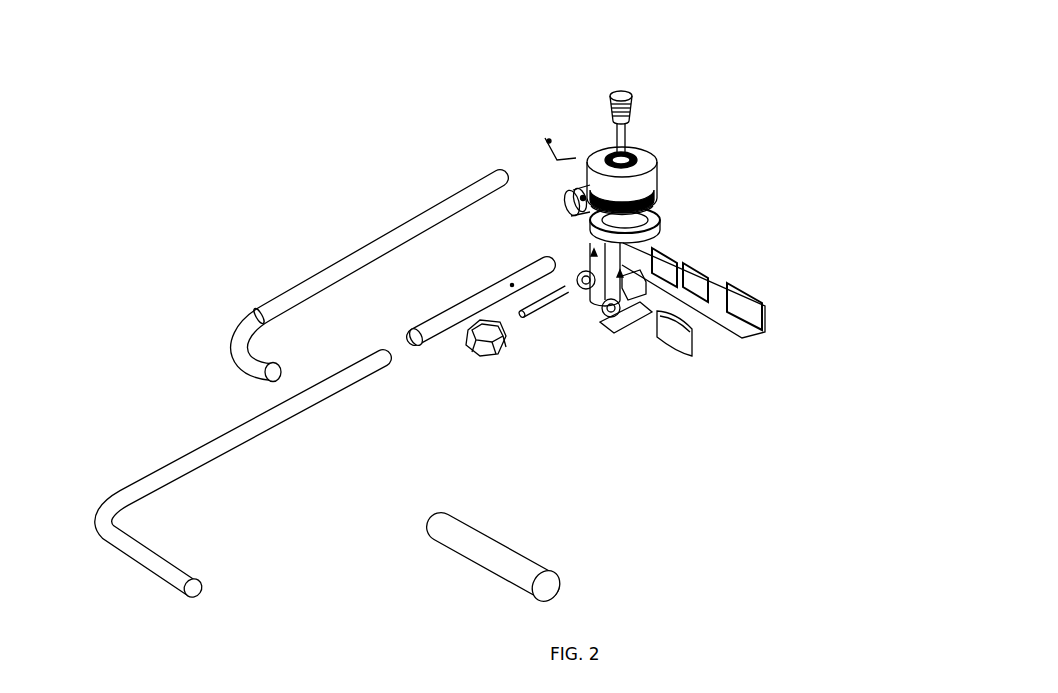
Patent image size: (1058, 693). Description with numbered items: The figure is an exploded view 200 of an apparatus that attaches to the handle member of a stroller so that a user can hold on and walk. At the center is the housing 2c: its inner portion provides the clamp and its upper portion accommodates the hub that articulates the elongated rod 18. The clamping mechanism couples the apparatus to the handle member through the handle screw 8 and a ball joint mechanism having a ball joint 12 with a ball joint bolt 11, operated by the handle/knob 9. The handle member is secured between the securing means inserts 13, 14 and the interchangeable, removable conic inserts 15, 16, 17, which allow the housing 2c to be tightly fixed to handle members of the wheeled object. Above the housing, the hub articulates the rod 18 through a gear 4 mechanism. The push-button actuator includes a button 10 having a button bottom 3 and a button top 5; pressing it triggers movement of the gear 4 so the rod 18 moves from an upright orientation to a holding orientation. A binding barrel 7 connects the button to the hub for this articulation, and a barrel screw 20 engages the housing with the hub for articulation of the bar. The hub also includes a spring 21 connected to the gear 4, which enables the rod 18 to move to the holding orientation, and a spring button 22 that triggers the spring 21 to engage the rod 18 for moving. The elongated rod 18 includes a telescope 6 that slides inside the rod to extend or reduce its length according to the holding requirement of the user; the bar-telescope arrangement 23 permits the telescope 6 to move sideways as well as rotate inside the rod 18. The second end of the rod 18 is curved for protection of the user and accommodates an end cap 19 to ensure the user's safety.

The exploded view 200 is at (123, 147).
The bar-telescope arrangement 23 is at (283, 305).
The handle/knob 9 is at (488, 318).
The handle screw 8 is at (521, 261).
The telescope 6 is at (540, 297).
The spring button 22 is at (543, 130).
The button top 5 is at (602, 151).
The button 10 is at (613, 92).
The binding barrel 7 is at (629, 92).
The spring 21 is at (652, 152).
The gear 4 is at (654, 192).
The button bottom 3 is at (657, 206).
The ball joint 12 is at (675, 238).
The ball joint bolt 11 is at (655, 250).
The removable insert/conic insert 1 15 is at (690, 262).
The removable insert/conic insert 2 16 is at (722, 279).
The removable insert/conic insert 3 17 is at (760, 300).
The barrel screw 20 is at (763, 328).
The securing means insert/ball joint insert 1 13 is at (693, 341).
The securing means insert/ball joint insert 2 14 is at (634, 330).
The elongated rod 18 is at (207, 577).
The end cap 19 is at (553, 599).
The housing 2c is at (590, 262).